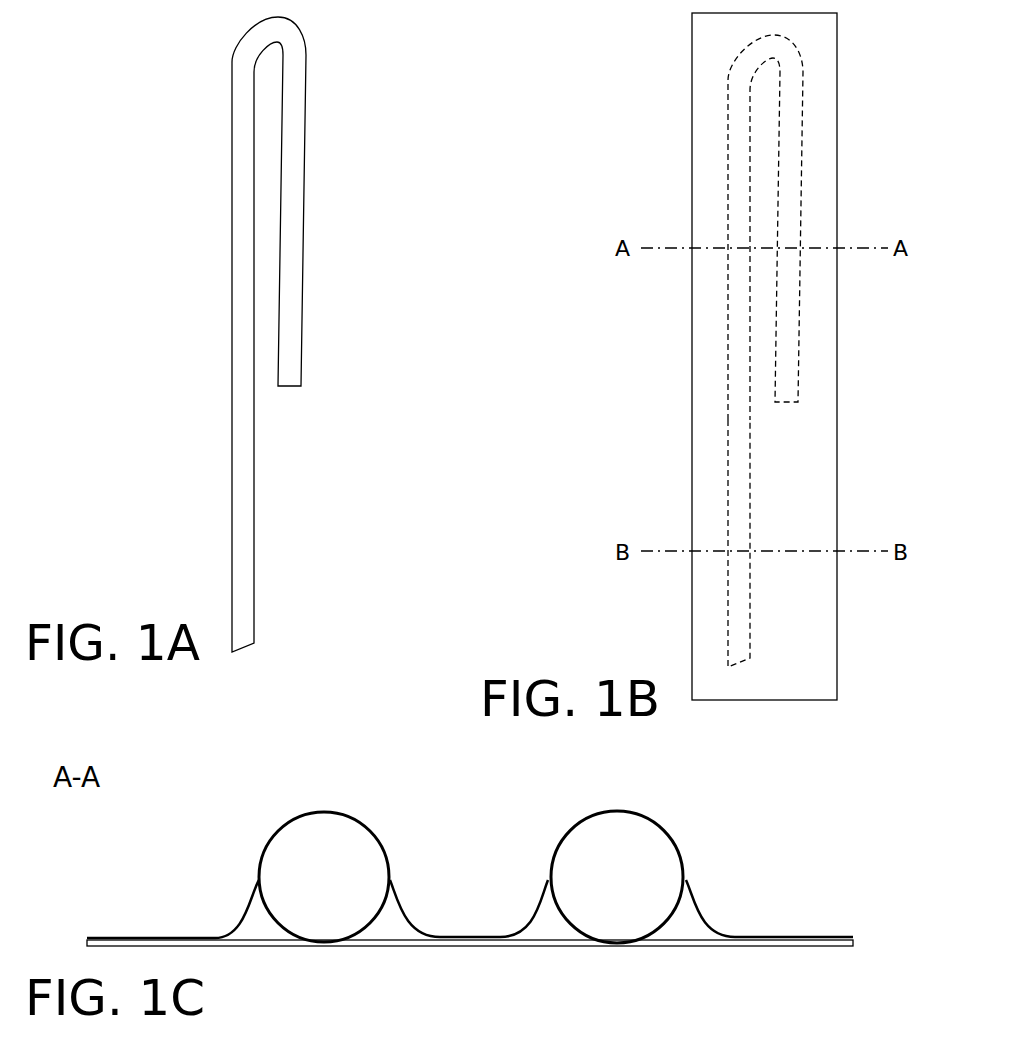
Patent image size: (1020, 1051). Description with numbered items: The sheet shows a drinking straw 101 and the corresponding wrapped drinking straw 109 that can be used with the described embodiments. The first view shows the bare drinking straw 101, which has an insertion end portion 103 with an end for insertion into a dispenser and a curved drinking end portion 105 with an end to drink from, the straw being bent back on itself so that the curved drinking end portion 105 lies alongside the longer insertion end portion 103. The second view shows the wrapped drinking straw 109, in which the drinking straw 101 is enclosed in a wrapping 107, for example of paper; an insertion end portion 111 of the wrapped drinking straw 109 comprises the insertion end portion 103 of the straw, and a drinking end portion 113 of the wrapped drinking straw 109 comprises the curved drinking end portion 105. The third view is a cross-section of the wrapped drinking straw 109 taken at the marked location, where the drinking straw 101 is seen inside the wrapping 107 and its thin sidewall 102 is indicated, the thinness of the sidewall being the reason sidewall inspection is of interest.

In FIG. 1A, the drinking straw 101 is at (169, 329).
In FIG. 1B, the drinking straw 101 is at (726, 351).
In FIG. 1C, the drinking straw 101 is at (382, 918).
In FIG. 1C, the sidewall 102 is at (268, 851).
In FIG. 1A, the insertion end portion 103 is at (175, 425).
In FIG. 1A, the curved drinking end portion 105 is at (183, 287).
In FIG. 1B, the wrapping 107 is at (692, 340).
In FIG. 1C, the wrapping 107 is at (240, 908).
In FIG. 1B, the wrapped drinking straw 109 is at (721, 353).
In FIG. 1C, the wrapped drinking straw 109 is at (488, 858).
In FIG. 1B, the insertion end portion of the wrapped drinking straw 111 is at (610, 412).
In FIG. 1B, the drinking end portion of the wrapped drinking straw 113 is at (637, 285).